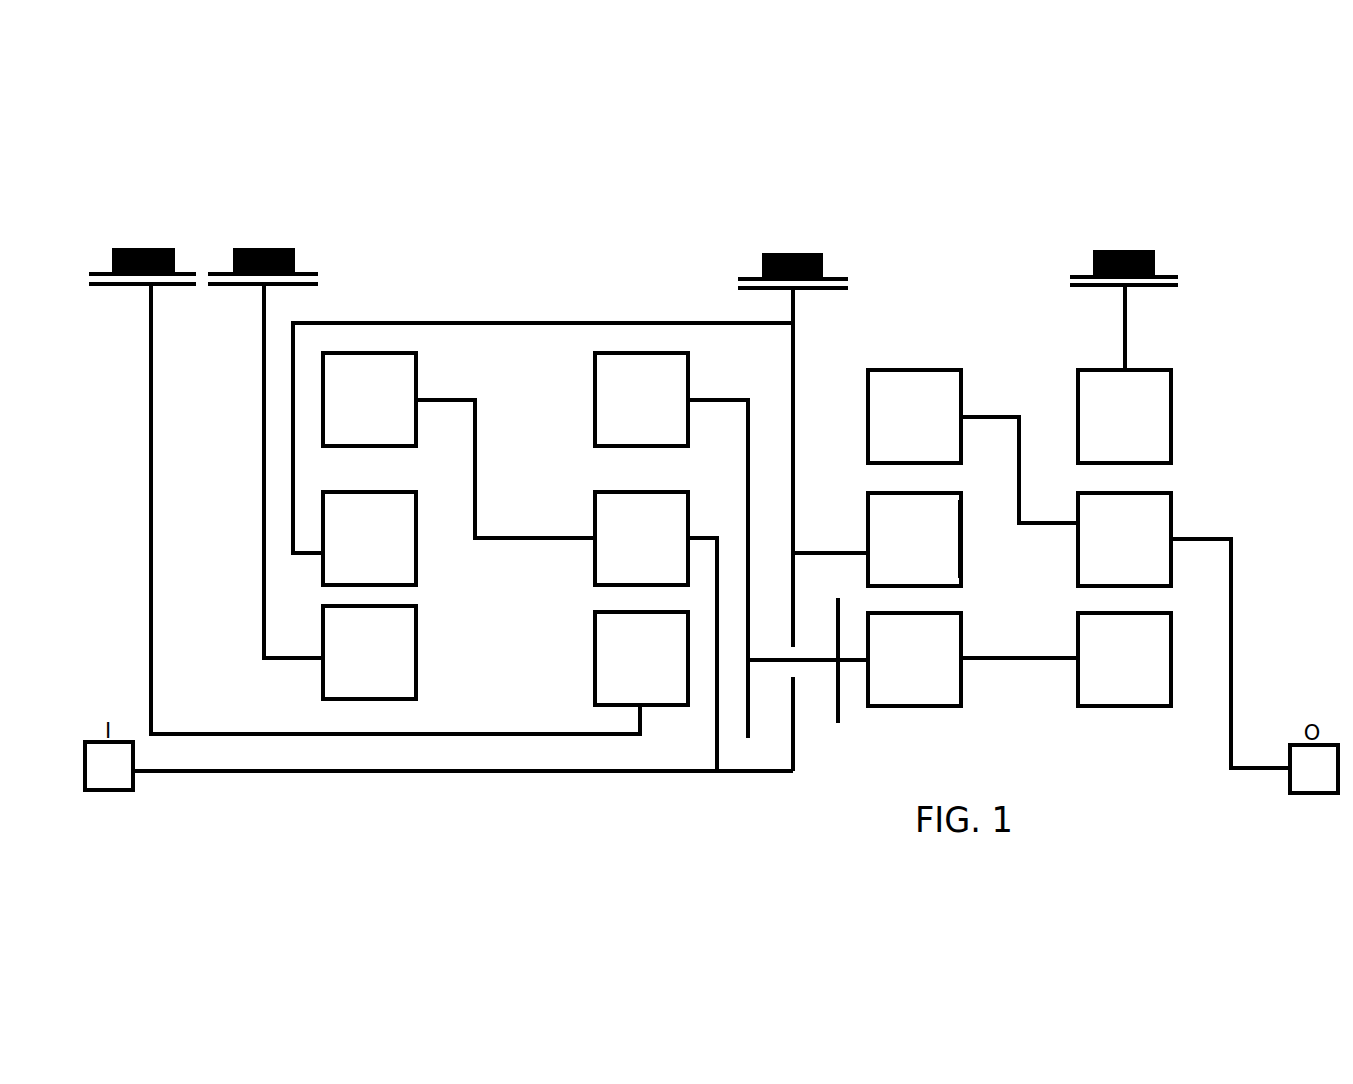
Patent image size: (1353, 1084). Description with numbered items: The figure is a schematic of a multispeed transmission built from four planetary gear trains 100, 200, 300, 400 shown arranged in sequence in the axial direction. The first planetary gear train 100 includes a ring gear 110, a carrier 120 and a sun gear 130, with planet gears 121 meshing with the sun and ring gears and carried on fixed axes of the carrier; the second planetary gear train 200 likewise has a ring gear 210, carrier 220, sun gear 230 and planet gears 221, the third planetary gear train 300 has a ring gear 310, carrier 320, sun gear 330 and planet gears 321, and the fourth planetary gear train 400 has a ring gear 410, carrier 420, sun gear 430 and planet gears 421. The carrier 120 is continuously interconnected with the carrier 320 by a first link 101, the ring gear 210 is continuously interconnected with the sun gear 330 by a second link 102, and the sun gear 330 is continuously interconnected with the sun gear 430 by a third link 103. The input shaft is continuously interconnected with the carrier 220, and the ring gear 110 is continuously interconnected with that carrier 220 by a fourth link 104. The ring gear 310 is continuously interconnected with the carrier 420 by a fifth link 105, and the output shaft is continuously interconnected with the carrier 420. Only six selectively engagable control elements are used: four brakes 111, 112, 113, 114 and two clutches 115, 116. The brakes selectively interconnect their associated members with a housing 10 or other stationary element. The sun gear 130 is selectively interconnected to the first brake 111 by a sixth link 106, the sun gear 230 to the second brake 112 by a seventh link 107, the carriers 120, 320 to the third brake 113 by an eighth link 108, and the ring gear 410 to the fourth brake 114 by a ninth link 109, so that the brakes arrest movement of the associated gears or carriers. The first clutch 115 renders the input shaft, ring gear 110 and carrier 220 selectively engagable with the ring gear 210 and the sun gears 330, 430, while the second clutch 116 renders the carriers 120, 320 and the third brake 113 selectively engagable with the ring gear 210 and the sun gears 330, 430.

The housing 10 is at (135, 250).
The first planetary gear train 100 is at (391, 472).
The first link 101 is at (500, 322).
The second link 102 is at (745, 463).
The third link 103 is at (993, 658).
The fourth link 104 is at (510, 538).
The fifth link 105 is at (1017, 481).
The sixth link 106 is at (263, 574).
The seventh link 107 is at (149, 588).
The eighth link 108 is at (793, 300).
The ninth link 109 is at (1124, 328).
The ring gear 110 is at (369, 399).
The first brake 111 is at (318, 280).
The second brake 112 is at (89, 274).
The third brake 113 is at (738, 286).
The fourth brake 114 is at (1093, 265).
The first clutch 115 is at (812, 710).
The second clutch 116 is at (812, 608).
The carrier 120 is at (369, 538).
The planet gears 121 is at (417, 548).
The sun gear 130 is at (369, 652).
The second planetary gear train 200 is at (641, 475).
The ring gear 210 is at (641, 399).
The carrier 220 is at (641, 538).
The planet gears 221 is at (688, 528).
The sun gear 230 is at (641, 658).
The third planetary gear train 300 is at (948, 477).
The ring gear 310 is at (914, 416).
The carrier 320 is at (914, 539).
The planet gears 321 is at (960, 540).
The sun gear 330 is at (914, 659).
The fourth planetary gear train 400 is at (1140, 490).
The ring gear 410 is at (1124, 416).
The carrier 420 is at (1124, 539).
The planet gears 421 is at (1078, 548).
The sun gear 430 is at (1124, 659).